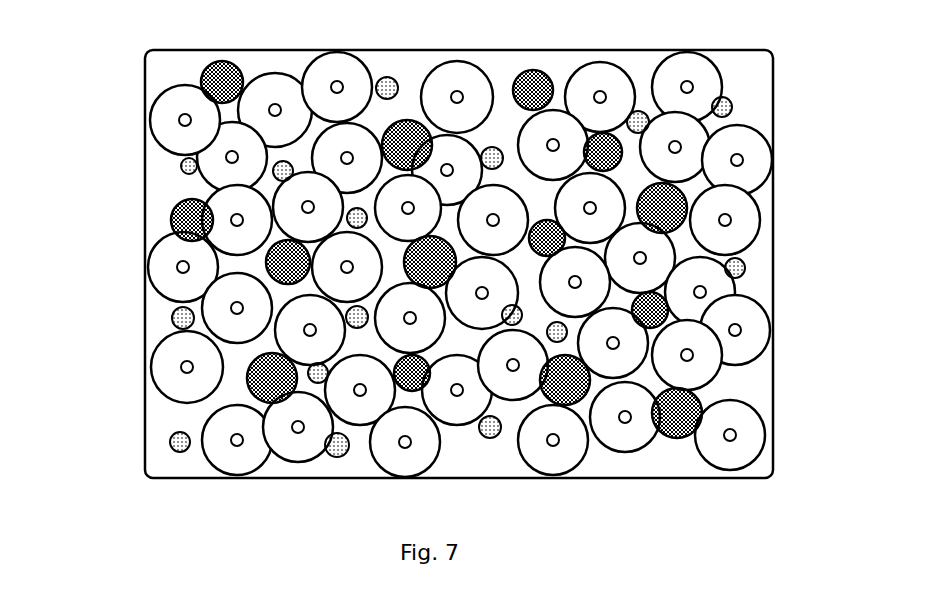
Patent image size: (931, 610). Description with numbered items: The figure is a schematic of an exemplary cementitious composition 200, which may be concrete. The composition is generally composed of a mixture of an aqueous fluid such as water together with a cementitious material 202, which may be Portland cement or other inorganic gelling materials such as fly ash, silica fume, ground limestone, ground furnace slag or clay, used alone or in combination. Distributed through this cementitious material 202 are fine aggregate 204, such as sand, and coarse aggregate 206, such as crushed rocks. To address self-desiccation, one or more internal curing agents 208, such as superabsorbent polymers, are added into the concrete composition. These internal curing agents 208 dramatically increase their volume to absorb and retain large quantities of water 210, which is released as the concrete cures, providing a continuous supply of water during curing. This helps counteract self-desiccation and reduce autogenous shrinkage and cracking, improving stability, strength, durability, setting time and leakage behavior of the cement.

The cementitious composition 200 is at (453, 264).
The cementitious material 202 is at (753, 383).
The fine aggregate 204 is at (173, 318).
The coarse aggregate 206 is at (173, 218).
The internal curing agents 208 is at (180, 122).
The water 210 is at (173, 108).